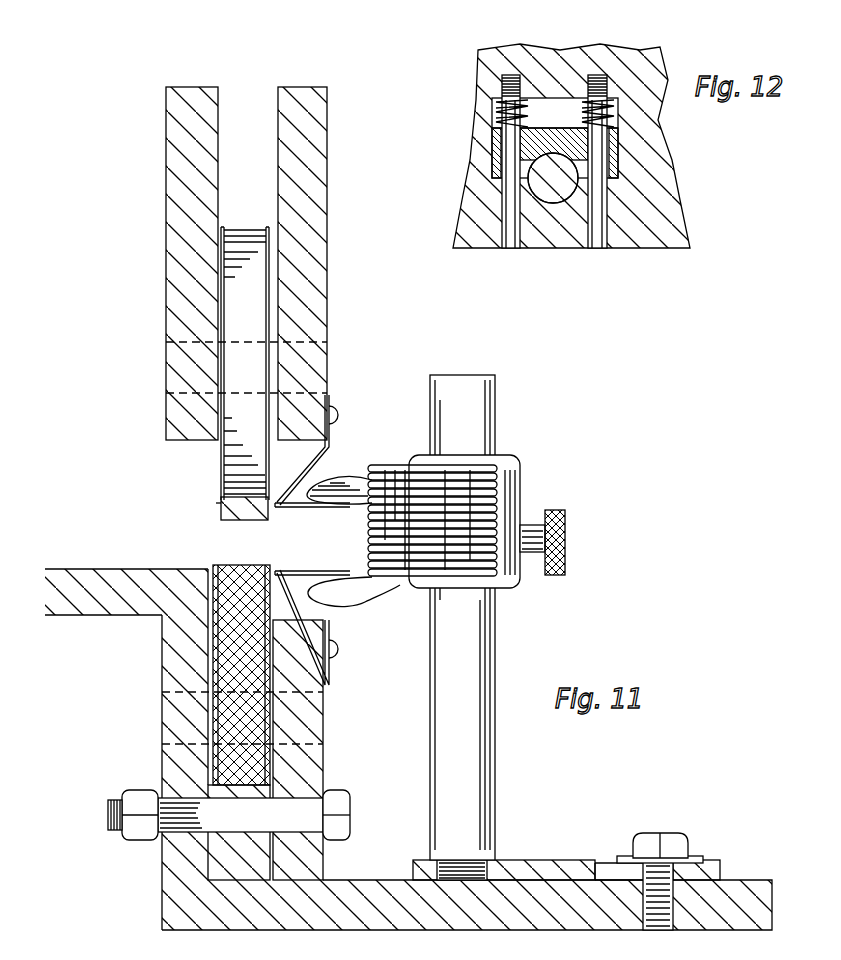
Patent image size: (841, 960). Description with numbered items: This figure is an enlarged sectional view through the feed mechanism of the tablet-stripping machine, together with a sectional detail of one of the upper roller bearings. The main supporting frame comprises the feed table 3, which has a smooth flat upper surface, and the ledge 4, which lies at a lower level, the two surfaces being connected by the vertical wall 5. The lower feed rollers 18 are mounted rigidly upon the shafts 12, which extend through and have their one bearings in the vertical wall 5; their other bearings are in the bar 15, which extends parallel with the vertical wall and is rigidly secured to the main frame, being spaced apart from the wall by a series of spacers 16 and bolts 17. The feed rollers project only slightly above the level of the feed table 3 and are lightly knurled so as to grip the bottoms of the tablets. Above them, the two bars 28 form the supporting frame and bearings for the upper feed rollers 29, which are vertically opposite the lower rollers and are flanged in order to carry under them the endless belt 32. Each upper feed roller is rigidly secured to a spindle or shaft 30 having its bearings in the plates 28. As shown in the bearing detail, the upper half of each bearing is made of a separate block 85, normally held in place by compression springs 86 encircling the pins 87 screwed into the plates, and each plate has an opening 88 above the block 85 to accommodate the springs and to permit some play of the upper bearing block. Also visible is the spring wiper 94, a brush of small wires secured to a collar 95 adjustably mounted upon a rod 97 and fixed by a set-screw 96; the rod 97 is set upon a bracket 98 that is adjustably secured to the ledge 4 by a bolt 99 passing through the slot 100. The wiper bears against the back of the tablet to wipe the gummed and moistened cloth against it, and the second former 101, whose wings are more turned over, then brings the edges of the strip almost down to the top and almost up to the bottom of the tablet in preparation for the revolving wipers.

In FIG. 11, the feed table 3 is at (67, 571).
In FIG. 11, the ledge 4 is at (382, 880).
In FIG. 11, the vertical wall 5 is at (172, 761).
In FIG. 11, the shafts 12 is at (186, 684).
In FIG. 11, the bar 15 is at (325, 751).
In FIG. 11, the spacers 16 is at (222, 852).
In FIG. 11, the bolts 17 is at (108, 828).
In FIG. 11, the feed rollers 18 is at (230, 568).
In FIG. 11, the bars 28 is at (272, 116).
In FIG. 12, the bars 28 is at (461, 225).
In FIG. 11, the upper feed rollers 29 is at (258, 236).
In FIG. 12, the spindles or shafts 30 is at (536, 177).
In FIG. 11, the endless belt 32 is at (222, 513).
In FIG. 12, the bearing block 85 is at (492, 146).
In FIG. 12, the compression springs 86 is at (578, 106).
In FIG. 12, the pins 87 is at (515, 250).
In FIG. 12, the opening 88 is at (563, 100).
In FIG. 11, the spring wiper 94 is at (390, 465).
In FIG. 11, the collar 95 is at (521, 479).
In FIG. 11, the set-screw 96 is at (566, 539).
In FIG. 11, the rod 97 is at (497, 654).
In FIG. 11, the bracket 98 is at (504, 859).
In FIG. 11, the bolt 99 is at (676, 834).
In FIG. 11, the slot 100 is at (606, 861).
In FIG. 11, the second former 101 is at (362, 574).